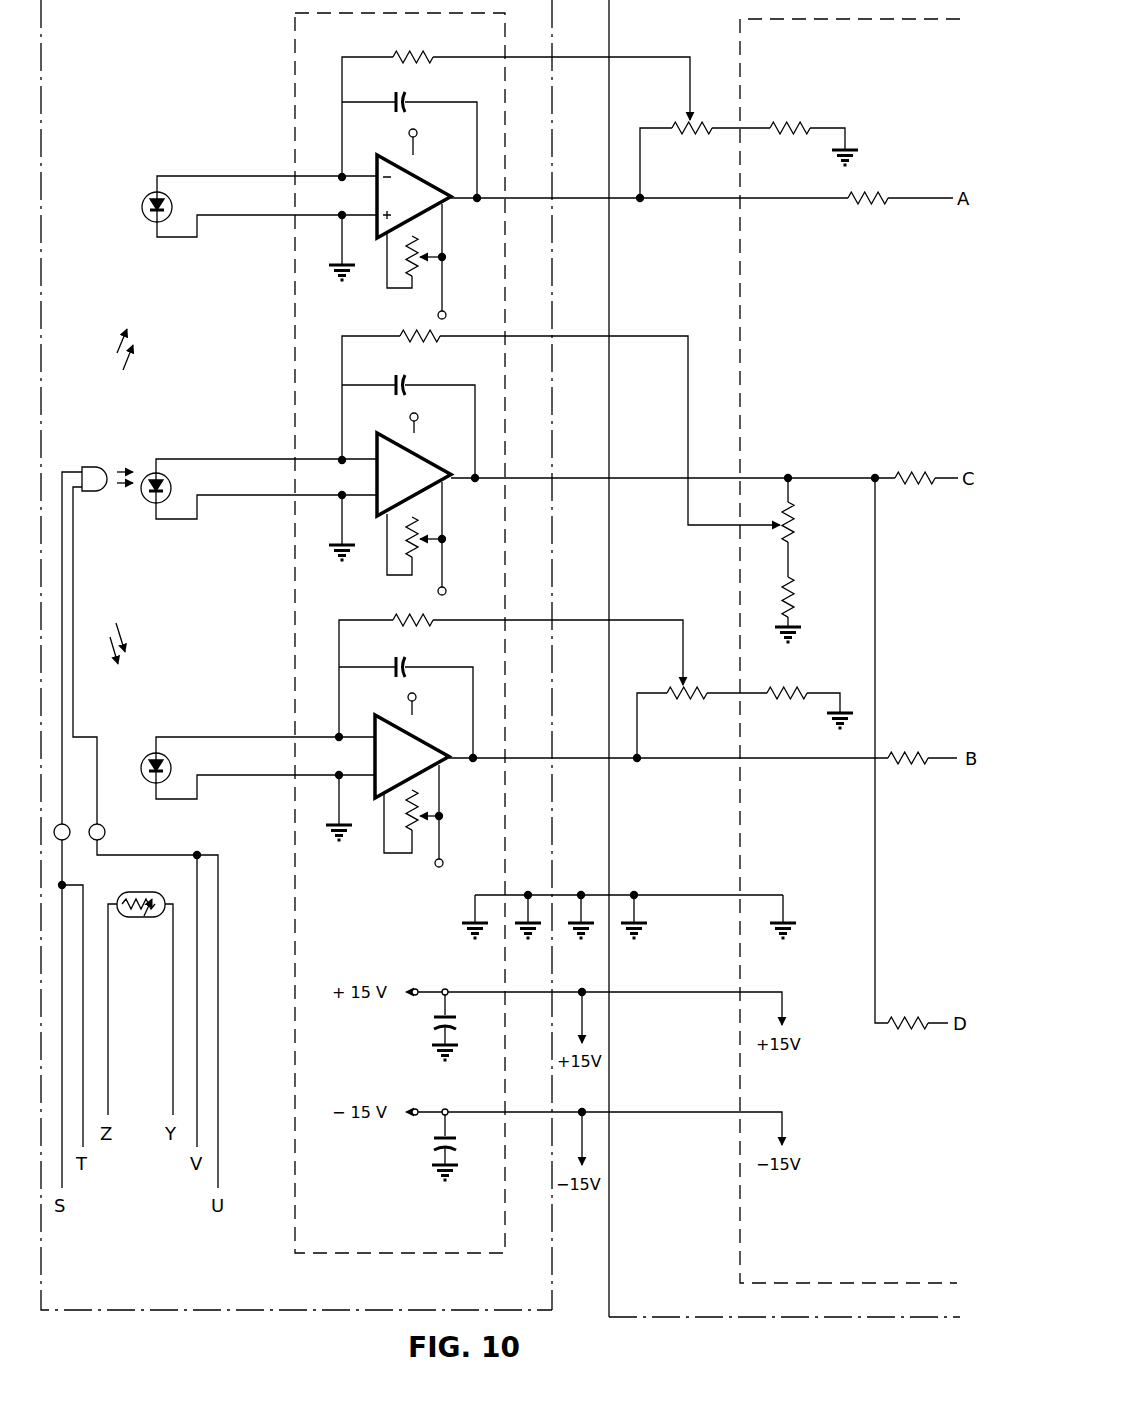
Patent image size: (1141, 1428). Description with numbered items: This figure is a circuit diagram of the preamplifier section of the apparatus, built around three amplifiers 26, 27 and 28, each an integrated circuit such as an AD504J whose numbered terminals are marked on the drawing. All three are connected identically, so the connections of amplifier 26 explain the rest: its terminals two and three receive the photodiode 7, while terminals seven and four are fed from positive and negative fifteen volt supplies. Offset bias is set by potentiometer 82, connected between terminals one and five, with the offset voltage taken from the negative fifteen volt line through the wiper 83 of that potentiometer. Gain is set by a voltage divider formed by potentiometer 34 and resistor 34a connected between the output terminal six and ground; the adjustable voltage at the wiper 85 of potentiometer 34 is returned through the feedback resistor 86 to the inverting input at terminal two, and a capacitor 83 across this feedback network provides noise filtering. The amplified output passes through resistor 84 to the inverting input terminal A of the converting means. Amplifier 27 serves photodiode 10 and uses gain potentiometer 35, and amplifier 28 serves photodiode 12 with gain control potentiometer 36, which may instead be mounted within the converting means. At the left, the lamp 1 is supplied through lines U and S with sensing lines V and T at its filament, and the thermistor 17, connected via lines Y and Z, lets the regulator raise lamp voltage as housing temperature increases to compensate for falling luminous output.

The lamp 1 is at (85, 468).
The photodiode 7 is at (140, 203).
The photodiode 10 is at (146, 756).
The photodiode 12 is at (144, 500).
The thermistor 17 is at (144, 892).
The amplifier 26 is at (376, 188).
The amplifier 27 is at (375, 754).
The amplifier 28 is at (377, 474).
The potentiometer 34 is at (684, 134).
The resistor 34a is at (790, 126).
The potentiometer 35 is at (674, 700).
The gain control potentiometer 36 is at (796, 538).
The potentiometer 82 is at (420, 285).
The capacitor 83 is at (403, 96).
The resistor 84 is at (868, 194).
The wiper 85 is at (689, 82).
The feedback resistor 86 is at (422, 56).